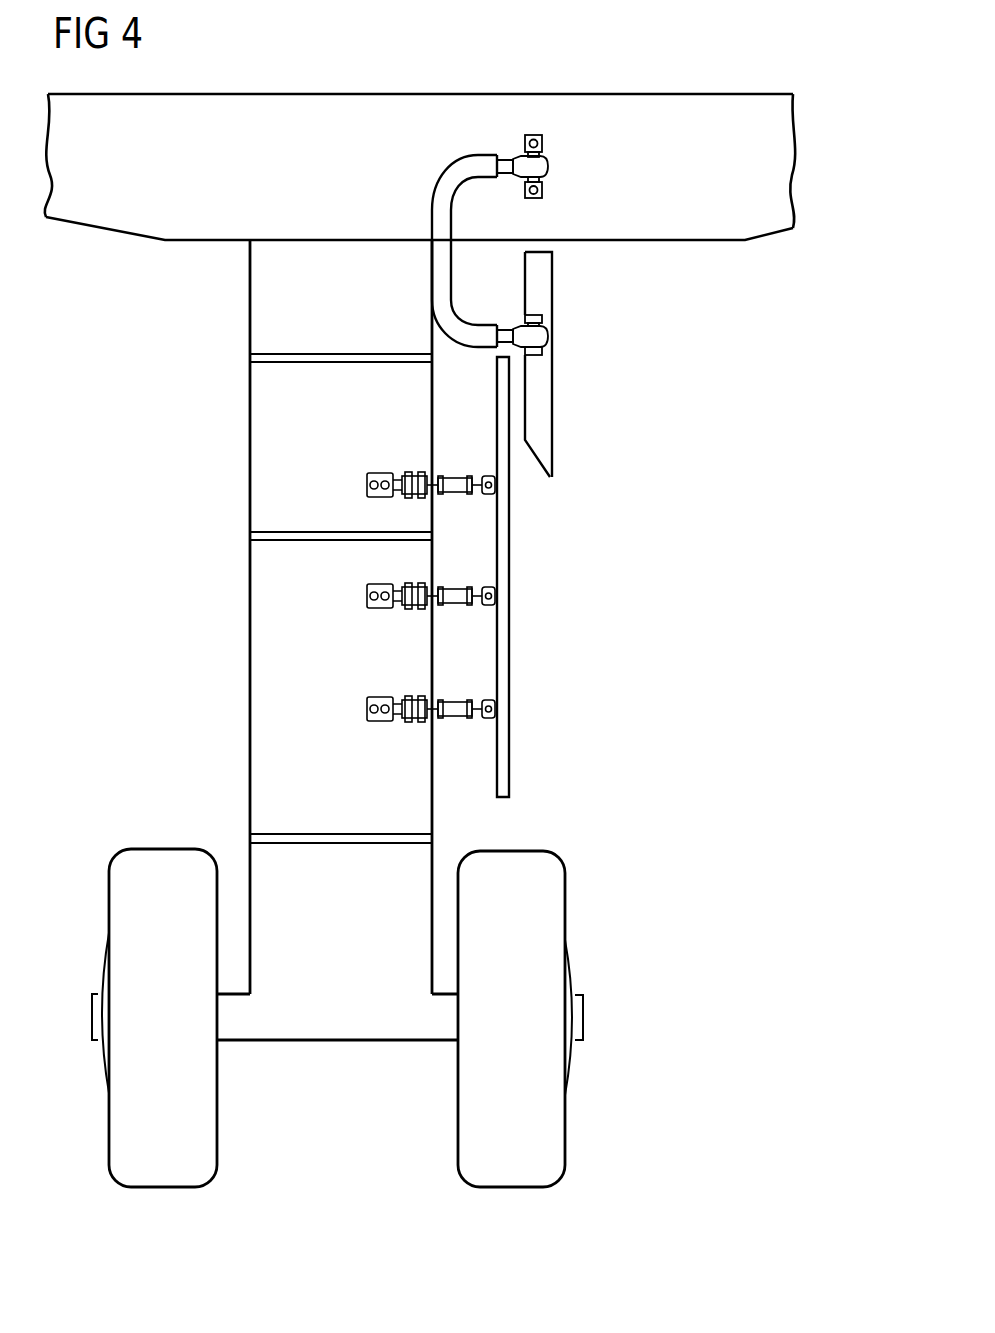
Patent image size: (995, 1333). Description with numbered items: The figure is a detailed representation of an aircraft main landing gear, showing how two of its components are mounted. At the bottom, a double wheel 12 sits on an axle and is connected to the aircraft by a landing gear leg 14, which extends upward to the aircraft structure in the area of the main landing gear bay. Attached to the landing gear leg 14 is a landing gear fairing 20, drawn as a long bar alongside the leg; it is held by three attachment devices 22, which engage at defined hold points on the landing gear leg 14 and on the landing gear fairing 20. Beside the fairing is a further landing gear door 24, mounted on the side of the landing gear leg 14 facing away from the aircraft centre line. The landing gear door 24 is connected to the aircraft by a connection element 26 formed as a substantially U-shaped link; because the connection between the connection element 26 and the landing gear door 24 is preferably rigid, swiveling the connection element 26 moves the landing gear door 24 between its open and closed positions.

The double wheels 12 is at (335, 1188).
The landing gear leg 14 is at (265, 616).
The landing gear fairing 20 is at (505, 645).
The attachment devices 22 is at (454, 474).
The landing gear door 24 is at (545, 380).
The connection element 26 is at (441, 218).